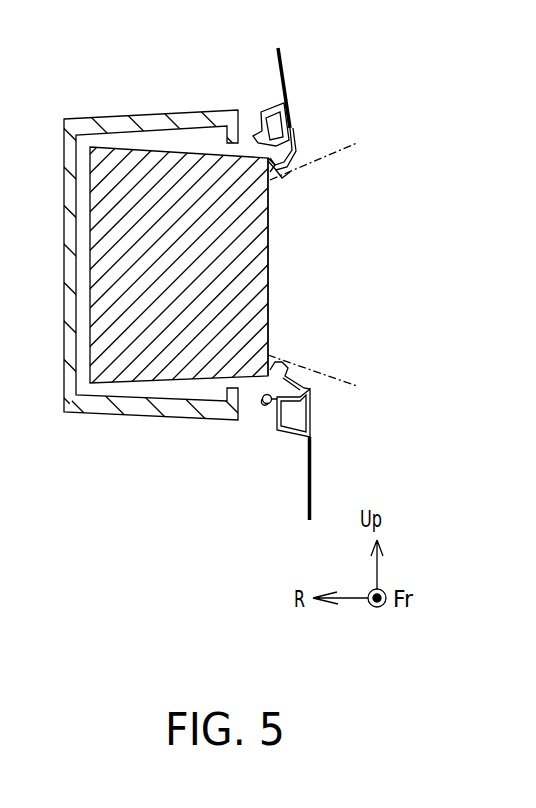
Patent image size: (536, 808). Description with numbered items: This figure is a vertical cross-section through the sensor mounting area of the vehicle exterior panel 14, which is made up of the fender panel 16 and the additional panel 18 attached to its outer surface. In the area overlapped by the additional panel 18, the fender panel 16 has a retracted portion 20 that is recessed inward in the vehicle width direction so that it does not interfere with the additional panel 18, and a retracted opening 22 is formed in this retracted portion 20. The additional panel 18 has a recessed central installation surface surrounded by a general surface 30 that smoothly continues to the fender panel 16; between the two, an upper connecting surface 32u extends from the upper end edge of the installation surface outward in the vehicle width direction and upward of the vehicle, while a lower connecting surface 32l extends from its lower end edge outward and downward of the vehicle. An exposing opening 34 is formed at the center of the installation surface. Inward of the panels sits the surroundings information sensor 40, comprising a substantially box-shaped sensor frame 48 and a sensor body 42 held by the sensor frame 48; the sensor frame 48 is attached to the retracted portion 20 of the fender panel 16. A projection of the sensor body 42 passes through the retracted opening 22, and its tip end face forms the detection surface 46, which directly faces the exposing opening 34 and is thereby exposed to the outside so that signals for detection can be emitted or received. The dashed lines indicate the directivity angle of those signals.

The exterior panel 14 is at (321, 443).
The fender panel 16 is at (282, 67).
The additional panel 18 is at (314, 410).
The retracted portion 20 is at (257, 128).
The retracted opening 22 is at (266, 404).
The general surface 30 is at (290, 125).
The upper connecting surface 32u is at (292, 160).
The lower connecting surface 32l is at (297, 370).
The exposing opening 34 is at (275, 173).
The surroundings information sensor 40 is at (261, 216).
The sensor body 42 is at (178, 152).
The detection surface 46 is at (270, 262).
The sensor frame 48 is at (117, 125).